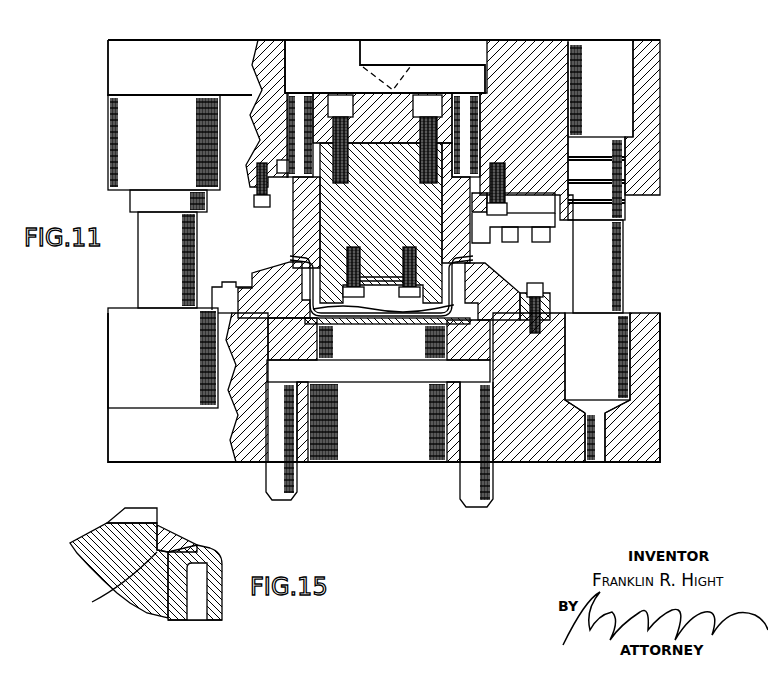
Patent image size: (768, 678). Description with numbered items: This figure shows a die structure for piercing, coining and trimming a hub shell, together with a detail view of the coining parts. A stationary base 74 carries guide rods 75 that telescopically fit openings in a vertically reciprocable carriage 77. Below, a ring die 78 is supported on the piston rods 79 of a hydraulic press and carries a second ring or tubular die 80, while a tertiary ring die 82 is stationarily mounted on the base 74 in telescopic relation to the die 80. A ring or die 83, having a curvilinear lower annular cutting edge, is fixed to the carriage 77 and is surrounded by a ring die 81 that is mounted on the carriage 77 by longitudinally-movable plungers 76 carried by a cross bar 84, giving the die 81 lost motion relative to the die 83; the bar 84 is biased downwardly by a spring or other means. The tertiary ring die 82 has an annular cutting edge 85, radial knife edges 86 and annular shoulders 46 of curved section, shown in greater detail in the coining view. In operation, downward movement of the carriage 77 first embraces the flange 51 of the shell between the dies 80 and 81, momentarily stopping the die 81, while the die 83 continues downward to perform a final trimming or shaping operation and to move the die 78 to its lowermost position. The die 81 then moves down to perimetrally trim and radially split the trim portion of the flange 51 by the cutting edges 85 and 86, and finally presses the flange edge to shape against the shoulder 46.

In FIG. 11, the stationary base 74 is at (650, 423).
In FIG. 11, the guide rods 75 is at (138, 268).
In FIG. 11, the longitudinally-movable plungers 76 is at (300, 108).
In FIG. 11, the vertically reciprocable carriage 77 is at (108, 77).
In FIG. 11, the ring die 78 is at (385, 362).
In FIG. 11, the piston rods 79 is at (470, 480).
In FIG. 11, the second ring or tubular die 80 is at (466, 302).
In FIG. 15, the second ring or tubular die 80 is at (173, 621).
In FIG. 11, the ring die 81 is at (293, 232).
In FIG. 11, the tertiary ring die 82 is at (262, 272).
In FIG. 15, the tertiary ring die 82 is at (83, 539).
In FIG. 11, the ring or die 83 is at (397, 304).
In FIG. 11, the cross bar 84 is at (320, 70).
In FIG. 15, the annular cutting edge 85 is at (158, 526).
In FIG. 11, the radial knife edges 86 is at (465, 266).
In FIG. 15, the radial knife edges 86 is at (146, 515).
In FIG. 15, the flange 51 is at (200, 550).
In FIG. 15, the annular shoulders 46 is at (92, 602).